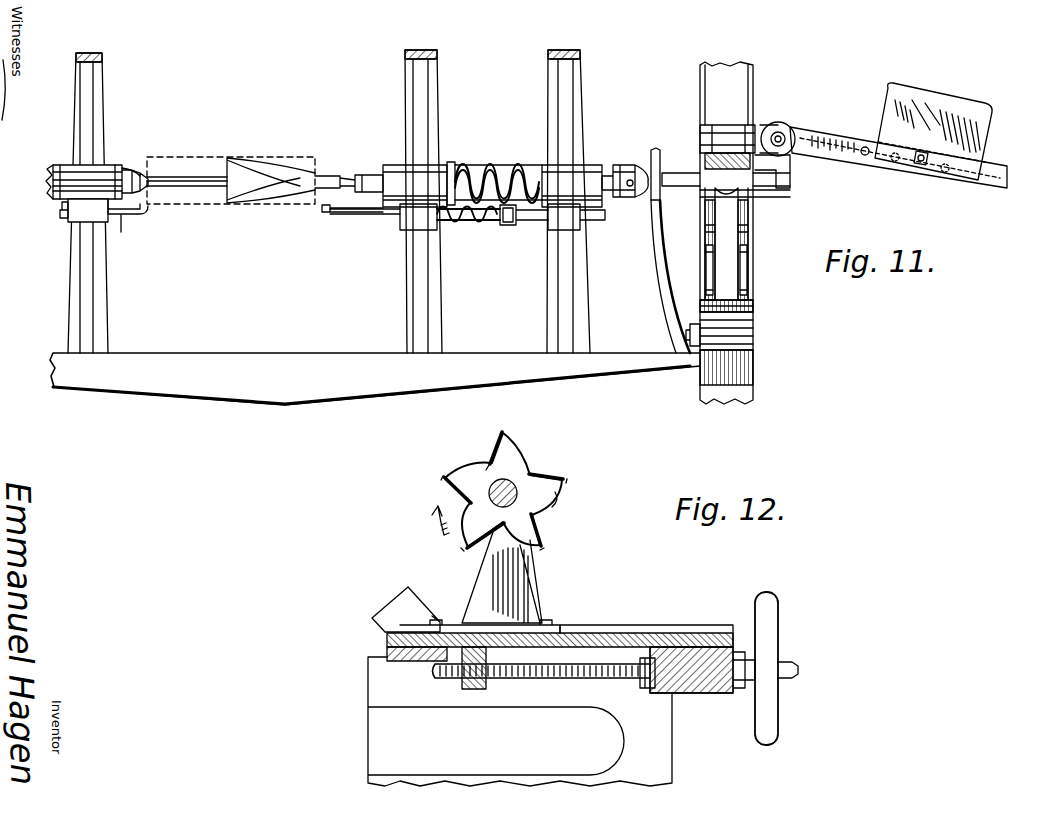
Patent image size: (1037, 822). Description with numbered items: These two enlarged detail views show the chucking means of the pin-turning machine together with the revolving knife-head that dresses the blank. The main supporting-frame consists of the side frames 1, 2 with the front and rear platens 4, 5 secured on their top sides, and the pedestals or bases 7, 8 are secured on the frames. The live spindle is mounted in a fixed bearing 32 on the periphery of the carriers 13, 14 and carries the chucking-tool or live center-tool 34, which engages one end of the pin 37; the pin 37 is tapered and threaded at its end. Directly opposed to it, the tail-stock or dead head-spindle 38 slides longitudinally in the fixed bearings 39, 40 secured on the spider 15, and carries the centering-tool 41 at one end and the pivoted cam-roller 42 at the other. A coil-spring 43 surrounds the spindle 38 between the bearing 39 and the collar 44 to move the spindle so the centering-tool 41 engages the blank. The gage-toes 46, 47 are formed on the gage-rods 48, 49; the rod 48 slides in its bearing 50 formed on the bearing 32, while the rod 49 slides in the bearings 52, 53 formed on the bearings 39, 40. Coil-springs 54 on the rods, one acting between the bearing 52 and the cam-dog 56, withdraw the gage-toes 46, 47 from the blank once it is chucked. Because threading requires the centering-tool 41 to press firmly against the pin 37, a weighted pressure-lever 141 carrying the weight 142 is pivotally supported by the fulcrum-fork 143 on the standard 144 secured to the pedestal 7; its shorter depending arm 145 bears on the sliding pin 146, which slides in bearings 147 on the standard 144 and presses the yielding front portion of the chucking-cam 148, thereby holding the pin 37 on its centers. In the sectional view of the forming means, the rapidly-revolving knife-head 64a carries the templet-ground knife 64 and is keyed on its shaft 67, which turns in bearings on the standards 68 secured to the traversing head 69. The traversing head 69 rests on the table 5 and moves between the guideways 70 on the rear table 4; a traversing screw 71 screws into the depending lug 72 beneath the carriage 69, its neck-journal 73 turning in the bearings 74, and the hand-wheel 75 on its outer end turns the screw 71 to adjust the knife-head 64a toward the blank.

In FIG. 11, the side frame 1 is at (735, 372).
In FIG. 12, the side frame 2 is at (520, 721).
In FIG. 11, the front platen 4 is at (375, 379).
In FIG. 12, the rear platen 5 is at (408, 655).
In FIG. 11, the pedestal or base 7 is at (753, 330).
In FIG. 12, the pedestal or base 8 is at (406, 609).
In FIG. 11, the carrier 13 is at (572, 306).
In FIG. 11, the carrier 14 is at (425, 300).
In FIG. 11, the carrier or spider 15 is at (98, 306).
In FIG. 11, the fixed bearing 32 is at (75, 172).
In FIG. 11, the chucking-tool or live center-tool 34 is at (136, 170).
In FIG. 11, the pin 37 is at (231, 180).
In FIG. 11, the tail-stock or dead head-spindle 38 is at (630, 160).
In FIG. 11, the fixed bearing 39 is at (588, 160).
In FIG. 11, the fixed bearing 40 is at (392, 160).
In FIG. 11, the centering-tool 41 is at (336, 174).
In FIG. 11, the cam-roller 42 is at (652, 208).
In FIG. 11, the coil-spring 43 is at (482, 164).
In FIG. 11, the collar 44 is at (452, 162).
In FIG. 11, the gage-toe 46 is at (145, 212).
In FIG. 11, the gage-toe 47 is at (322, 220).
In FIG. 11, the gage-rod 48 is at (123, 234).
In FIG. 11, the gage-rod 49 is at (380, 216).
In FIG. 11, the bearing 50 is at (84, 210).
In FIG. 11, the bearing 52 is at (418, 217).
In FIG. 11, the bearing 53 is at (576, 217).
In FIG. 11, the coil-spring 54 is at (460, 222).
In FIG. 11, the cam-dog 56 is at (506, 225).
In FIG. 12, the knife 64 is at (504, 480).
In FIG. 12, the knife-head 64a is at (556, 490).
In FIG. 12, the shaft 67 is at (512, 478).
In FIG. 12, the standard 68 is at (502, 577).
In FIG. 12, the traversing head 69 is at (578, 633).
In FIG. 12, the guideway 70 is at (655, 632).
In FIG. 12, the traversing screw 71 is at (585, 680).
In FIG. 12, the depending lug 72 is at (478, 690).
In FIG. 12, the neck-journal 73 is at (642, 690).
In FIG. 12, the bearing 74 is at (700, 693).
In FIG. 12, the hand-wheel 75 is at (778, 632).
In FIG. 11, the weighted pressure-lever 141 is at (830, 130).
In FIG. 11, the weight 142 is at (975, 120).
In FIG. 11, the fulcrum-fork 143 is at (772, 128).
In FIG. 11, the standard 144 is at (740, 242).
In FIG. 11, the depending arm 145 is at (790, 176).
In FIG. 11, the sliding pin 146 is at (683, 158).
In FIG. 11, the bearing 147 is at (752, 202).
In FIG. 11, the chucking-cam 148 is at (662, 265).